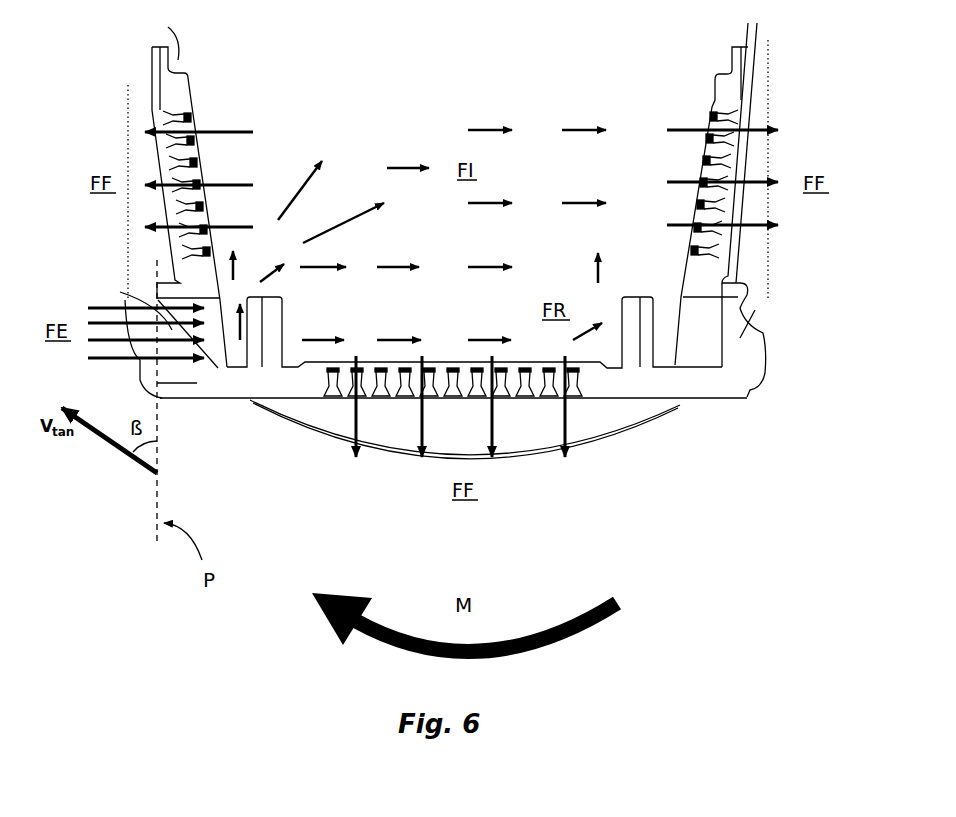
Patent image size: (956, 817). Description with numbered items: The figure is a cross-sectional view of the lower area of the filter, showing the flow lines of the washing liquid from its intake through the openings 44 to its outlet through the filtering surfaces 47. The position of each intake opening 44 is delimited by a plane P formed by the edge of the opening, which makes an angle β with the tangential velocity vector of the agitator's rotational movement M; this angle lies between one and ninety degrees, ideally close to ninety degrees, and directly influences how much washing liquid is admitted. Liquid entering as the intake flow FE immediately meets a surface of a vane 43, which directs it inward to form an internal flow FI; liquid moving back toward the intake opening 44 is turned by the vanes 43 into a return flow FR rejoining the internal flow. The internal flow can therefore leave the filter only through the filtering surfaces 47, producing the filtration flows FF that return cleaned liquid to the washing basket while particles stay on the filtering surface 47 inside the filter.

The vane 43 is at (258, 334).
The intake opening 44 is at (217, 364).
The filtering surface 47 is at (128, 114).